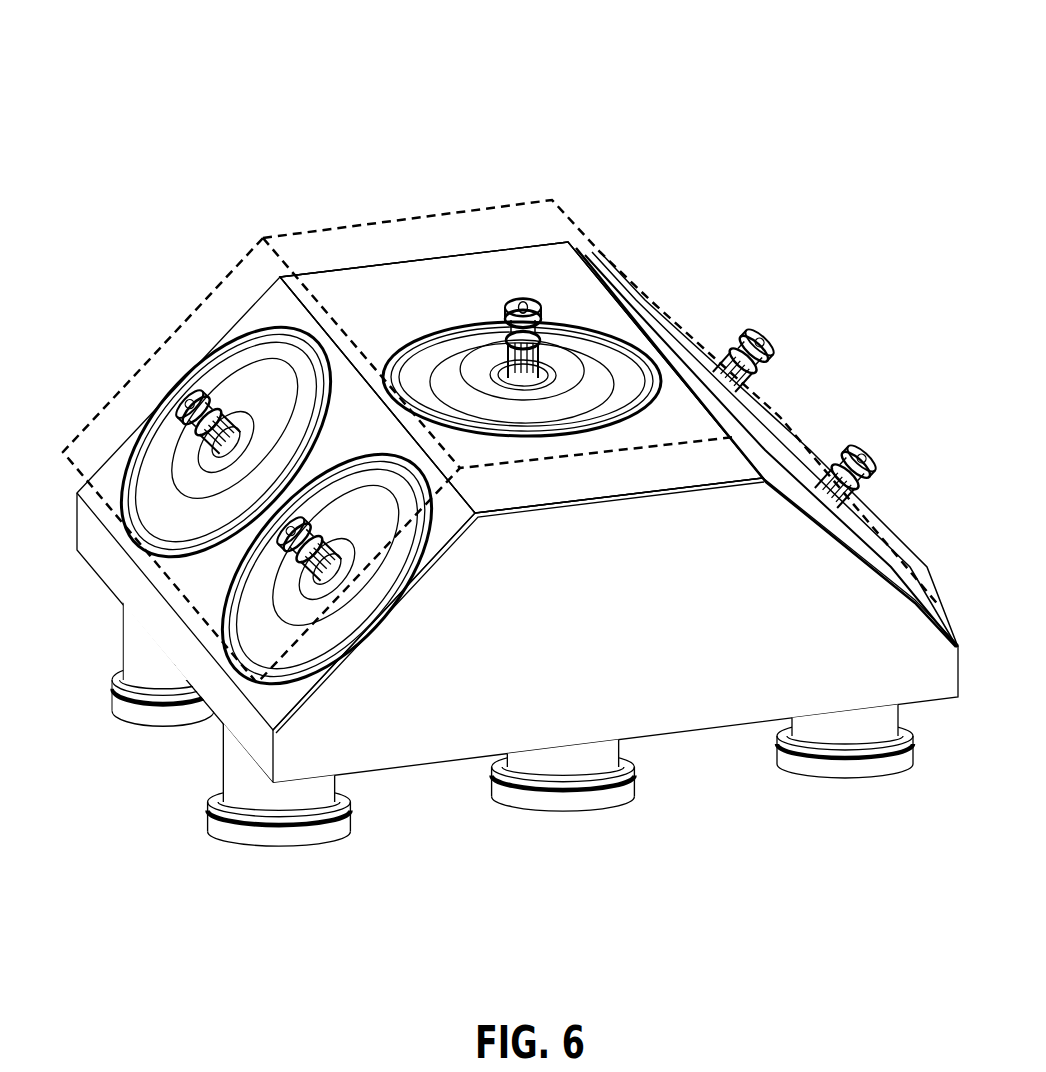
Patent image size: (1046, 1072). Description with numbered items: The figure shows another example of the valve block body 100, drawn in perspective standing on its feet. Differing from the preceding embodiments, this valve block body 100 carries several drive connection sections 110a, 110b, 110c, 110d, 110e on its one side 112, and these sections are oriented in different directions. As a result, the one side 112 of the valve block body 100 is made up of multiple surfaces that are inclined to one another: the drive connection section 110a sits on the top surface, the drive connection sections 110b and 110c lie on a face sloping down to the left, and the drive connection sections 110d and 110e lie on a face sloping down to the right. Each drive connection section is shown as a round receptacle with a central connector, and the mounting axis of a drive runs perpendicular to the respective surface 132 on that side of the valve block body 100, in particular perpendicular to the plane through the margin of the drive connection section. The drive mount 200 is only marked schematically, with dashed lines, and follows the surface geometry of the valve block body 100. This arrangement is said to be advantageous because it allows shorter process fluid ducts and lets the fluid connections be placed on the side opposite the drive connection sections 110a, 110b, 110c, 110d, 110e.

The valve block body 100 is at (707, 703).
The one side 112 is at (520, 126).
The surface 132 is at (549, 274).
The drive mount 200 is at (325, 230).
The drive connection section 110a is at (472, 296).
The drive connection section 110b is at (183, 364).
The drive connection section 110c is at (217, 577).
The drive connection section 110d is at (709, 324).
The drive connection section 110e is at (824, 446).